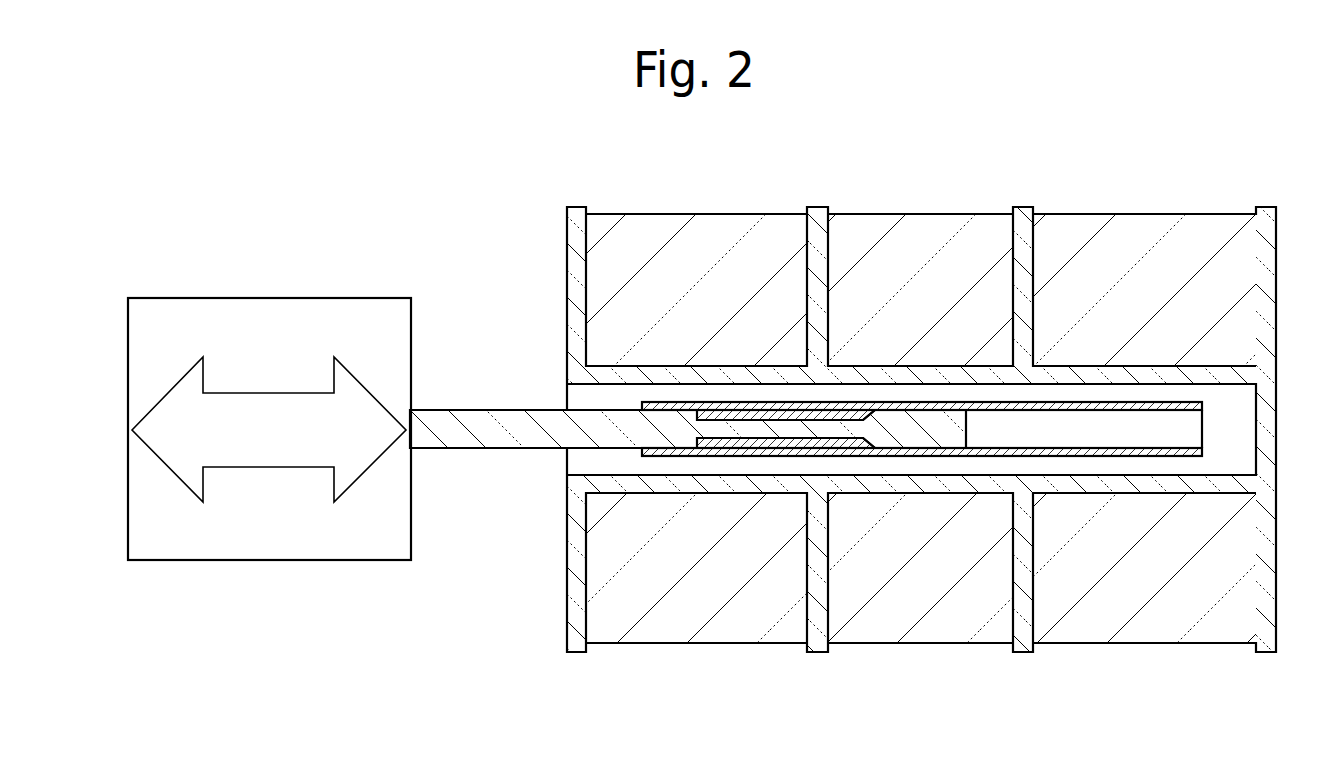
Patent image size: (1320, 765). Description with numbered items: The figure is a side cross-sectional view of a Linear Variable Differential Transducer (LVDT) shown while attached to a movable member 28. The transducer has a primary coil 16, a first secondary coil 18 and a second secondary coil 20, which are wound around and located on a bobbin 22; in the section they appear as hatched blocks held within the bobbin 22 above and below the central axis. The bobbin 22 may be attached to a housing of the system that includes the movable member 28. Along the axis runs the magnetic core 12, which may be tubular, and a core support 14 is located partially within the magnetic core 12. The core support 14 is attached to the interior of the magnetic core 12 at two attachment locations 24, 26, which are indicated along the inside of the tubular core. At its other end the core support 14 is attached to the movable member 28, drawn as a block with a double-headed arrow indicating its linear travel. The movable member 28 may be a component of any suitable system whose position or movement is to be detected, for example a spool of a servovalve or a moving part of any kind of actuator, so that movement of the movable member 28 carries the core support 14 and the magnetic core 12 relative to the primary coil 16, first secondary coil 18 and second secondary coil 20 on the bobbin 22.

The magnetic core 12 is at (1130, 430).
The core support 14 is at (481, 436).
The primary coil 16 is at (930, 265).
The first secondary coil 18 is at (1158, 272).
The second secondary coil 20 is at (690, 253).
The bobbin 22 is at (567, 241).
The attachment location 24 is at (680, 453).
The attachment location 26 is at (937, 450).
The movable member 28 is at (225, 298).